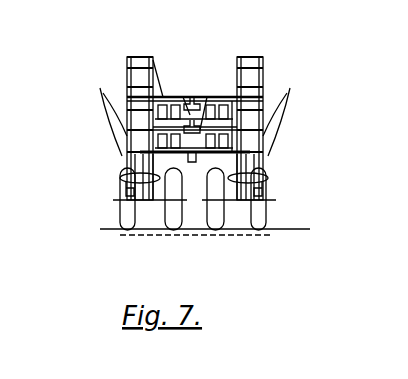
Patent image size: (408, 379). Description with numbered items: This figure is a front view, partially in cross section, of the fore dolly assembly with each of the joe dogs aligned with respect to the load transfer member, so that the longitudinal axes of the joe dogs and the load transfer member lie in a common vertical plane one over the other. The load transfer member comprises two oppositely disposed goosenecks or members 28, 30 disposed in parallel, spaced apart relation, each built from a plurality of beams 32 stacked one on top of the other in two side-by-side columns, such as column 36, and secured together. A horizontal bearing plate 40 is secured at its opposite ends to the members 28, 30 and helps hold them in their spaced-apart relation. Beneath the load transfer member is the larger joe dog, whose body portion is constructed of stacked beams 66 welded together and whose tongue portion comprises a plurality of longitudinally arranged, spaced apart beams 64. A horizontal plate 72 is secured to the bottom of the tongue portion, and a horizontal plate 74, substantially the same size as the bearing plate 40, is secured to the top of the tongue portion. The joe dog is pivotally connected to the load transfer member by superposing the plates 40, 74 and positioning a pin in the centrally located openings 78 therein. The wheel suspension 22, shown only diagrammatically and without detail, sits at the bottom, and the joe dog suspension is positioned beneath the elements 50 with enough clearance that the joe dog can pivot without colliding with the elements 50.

The wheel suspension 22 is at (266, 238).
The gooseneck member 28 is at (126, 62).
The gooseneck member 30 is at (262, 58).
The beams 32 is at (194, 128).
The column 36 is at (127, 116).
The stacked beams 66 is at (263, 116).
The horizontal bearing plate 40 is at (195, 82).
The elements 50 is at (128, 57).
The beams 64 is at (153, 57).
The horizontal plate 72 is at (215, 97).
The horizontal plate 74 is at (219, 97).
The centrally located openings 78 is at (183, 96).